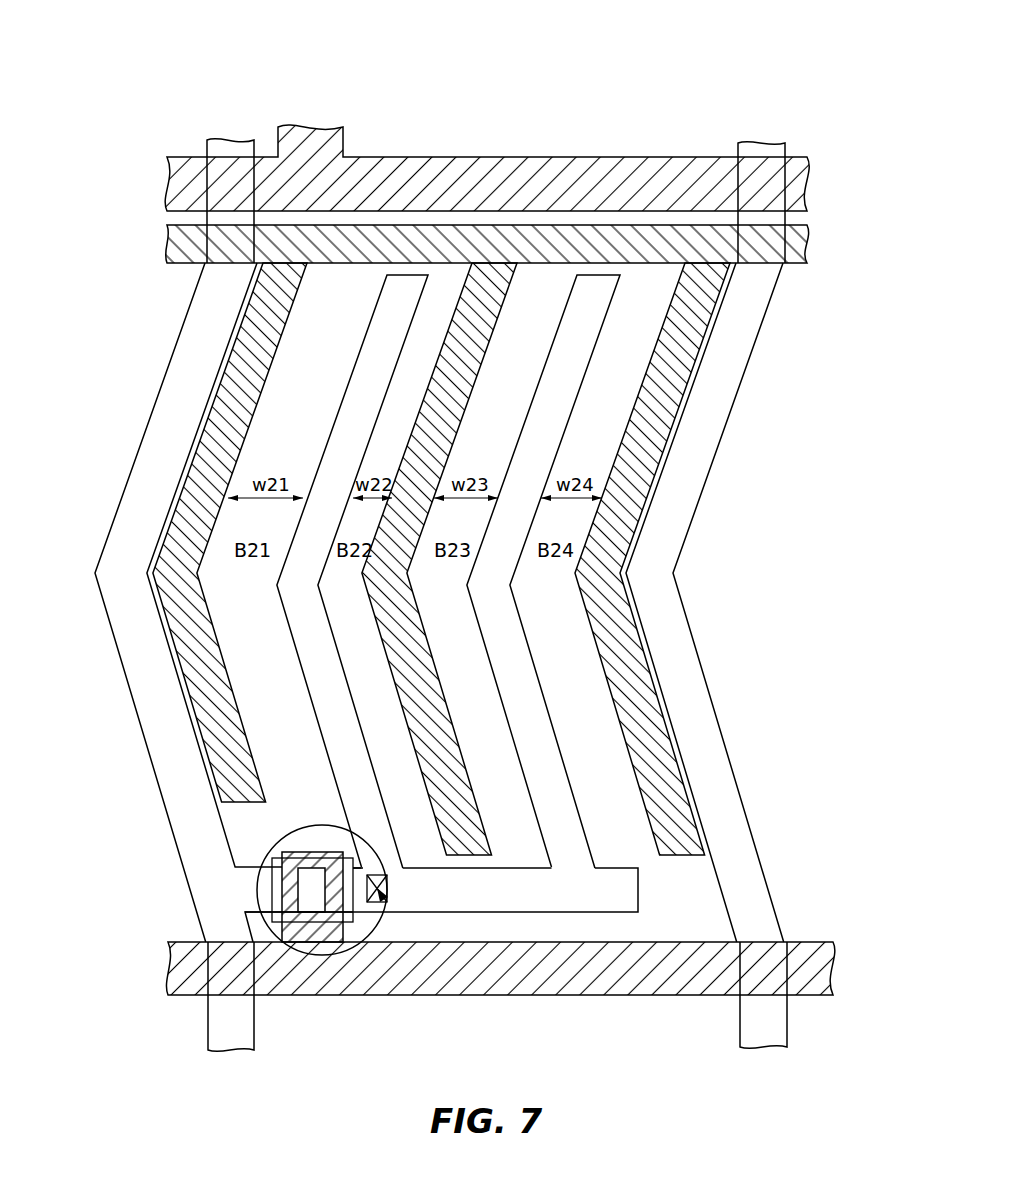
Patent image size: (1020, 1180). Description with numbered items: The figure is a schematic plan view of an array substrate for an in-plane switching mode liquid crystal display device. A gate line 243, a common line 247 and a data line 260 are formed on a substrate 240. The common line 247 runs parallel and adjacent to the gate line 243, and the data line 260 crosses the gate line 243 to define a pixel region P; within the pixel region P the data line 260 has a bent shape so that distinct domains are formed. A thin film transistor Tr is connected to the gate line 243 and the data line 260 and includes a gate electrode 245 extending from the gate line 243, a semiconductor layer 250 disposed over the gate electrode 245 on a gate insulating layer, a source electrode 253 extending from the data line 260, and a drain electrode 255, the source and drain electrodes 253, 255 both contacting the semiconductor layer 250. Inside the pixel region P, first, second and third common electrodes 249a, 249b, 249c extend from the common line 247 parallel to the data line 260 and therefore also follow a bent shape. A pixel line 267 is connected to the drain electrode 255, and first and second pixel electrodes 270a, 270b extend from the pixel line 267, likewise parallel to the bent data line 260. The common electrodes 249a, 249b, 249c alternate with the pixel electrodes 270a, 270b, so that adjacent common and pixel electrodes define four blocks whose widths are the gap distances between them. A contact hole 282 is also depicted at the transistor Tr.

The substrate 240 is at (512, 118).
The gate line 243 is at (712, 972).
The gate electrode 245 is at (290, 915).
The common line 247 is at (807, 247).
The first common electrode 249a is at (238, 373).
The second common electrode 249b is at (497, 850).
The third common electrode 249c is at (720, 800).
The semiconductor layer 250 is at (350, 920).
The source electrode 253 is at (265, 892).
The drain electrode 255 is at (357, 868).
The data line 260 is at (178, 428).
The pixel line 267 is at (553, 890).
The first pixel electrode 270a is at (408, 285).
The second pixel electrode 270b is at (595, 285).
The contact hole 282 is at (383, 903).
The pixel region P is at (648, 285).
The thin film transistor Tr is at (332, 963).